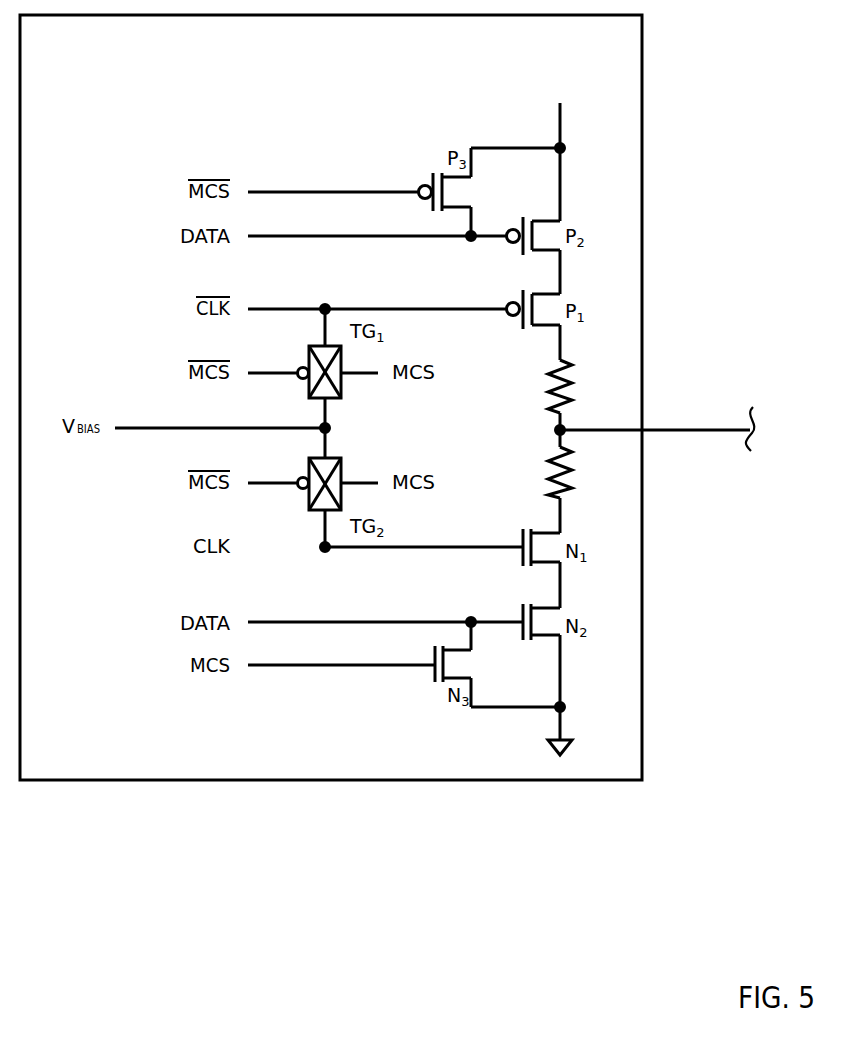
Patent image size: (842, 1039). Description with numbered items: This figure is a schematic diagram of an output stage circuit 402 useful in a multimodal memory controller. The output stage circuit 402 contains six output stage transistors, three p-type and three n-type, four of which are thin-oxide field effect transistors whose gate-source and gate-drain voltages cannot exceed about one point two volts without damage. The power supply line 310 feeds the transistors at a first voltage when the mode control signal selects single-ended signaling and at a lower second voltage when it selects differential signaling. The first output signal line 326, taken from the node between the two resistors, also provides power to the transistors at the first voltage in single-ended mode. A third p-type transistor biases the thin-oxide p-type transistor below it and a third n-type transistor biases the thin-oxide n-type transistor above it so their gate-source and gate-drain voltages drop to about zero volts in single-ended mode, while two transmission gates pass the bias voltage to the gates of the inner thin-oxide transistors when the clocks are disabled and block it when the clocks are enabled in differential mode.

The output stage circuit 402 is at (235, 44).
The power supply line 310 is at (560, 128).
The first output signal line 326 is at (696, 431).